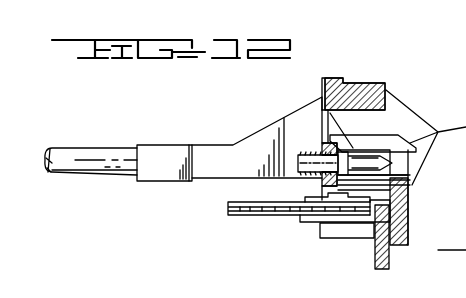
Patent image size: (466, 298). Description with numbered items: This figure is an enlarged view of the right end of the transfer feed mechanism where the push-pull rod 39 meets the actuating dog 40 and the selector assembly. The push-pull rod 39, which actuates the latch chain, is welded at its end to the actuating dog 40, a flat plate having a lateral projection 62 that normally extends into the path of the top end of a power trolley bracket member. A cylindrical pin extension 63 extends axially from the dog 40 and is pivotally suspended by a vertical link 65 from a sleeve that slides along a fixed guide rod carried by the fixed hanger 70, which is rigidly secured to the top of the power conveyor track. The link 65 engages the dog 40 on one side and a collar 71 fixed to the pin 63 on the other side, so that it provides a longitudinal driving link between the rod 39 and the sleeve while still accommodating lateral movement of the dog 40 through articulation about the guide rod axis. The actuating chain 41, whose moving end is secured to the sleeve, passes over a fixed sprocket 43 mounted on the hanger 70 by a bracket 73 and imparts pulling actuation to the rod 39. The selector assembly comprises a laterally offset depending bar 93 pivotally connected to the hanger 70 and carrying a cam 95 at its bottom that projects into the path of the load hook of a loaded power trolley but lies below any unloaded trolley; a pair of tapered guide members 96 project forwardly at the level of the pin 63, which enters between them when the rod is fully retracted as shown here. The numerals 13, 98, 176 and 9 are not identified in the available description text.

The direction of cable 13 is at (93, 160).
The push-pull rod 39 is at (115, 169).
The actuating dog 40 is at (183, 181).
The actuating chain 41 is at (280, 216).
The fixed sprocket 43 is at (316, 215).
The lateral projection 62 is at (320, 99).
The cylindrical pin extension 63 is at (410, 167).
The vertical link 65 is at (334, 176).
The fixed hanger 70 is at (378, 269).
The collar 71 is at (351, 152).
The bracket 73 is at (351, 233).
The depending bar 93 is at (408, 222).
The cam 95 is at (412, 126).
The tapered guide members 96 is at (412, 187).
The plug body 98 is at (289, 123).
The flange block 176 is at (386, 90).
The housing (partially shown) 9 is at (460, 130).